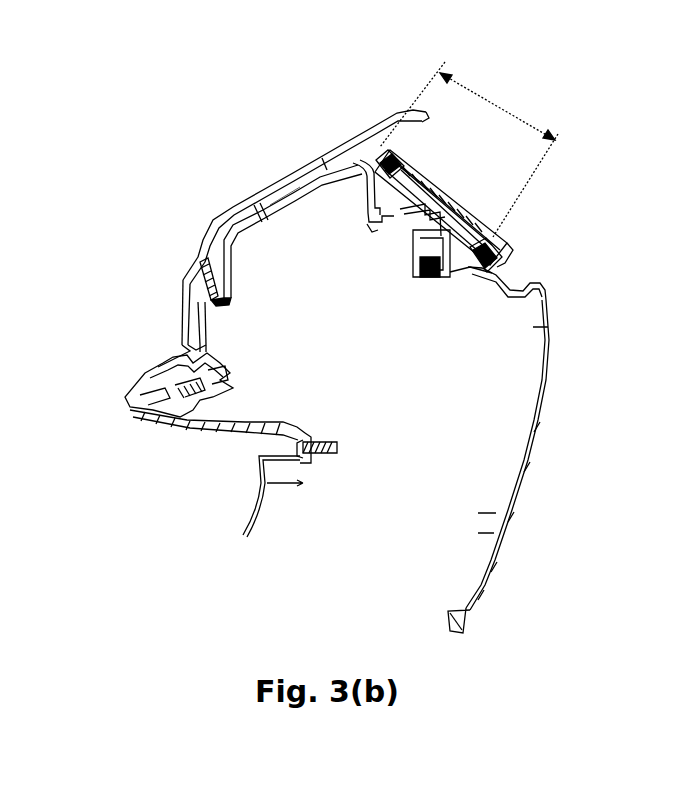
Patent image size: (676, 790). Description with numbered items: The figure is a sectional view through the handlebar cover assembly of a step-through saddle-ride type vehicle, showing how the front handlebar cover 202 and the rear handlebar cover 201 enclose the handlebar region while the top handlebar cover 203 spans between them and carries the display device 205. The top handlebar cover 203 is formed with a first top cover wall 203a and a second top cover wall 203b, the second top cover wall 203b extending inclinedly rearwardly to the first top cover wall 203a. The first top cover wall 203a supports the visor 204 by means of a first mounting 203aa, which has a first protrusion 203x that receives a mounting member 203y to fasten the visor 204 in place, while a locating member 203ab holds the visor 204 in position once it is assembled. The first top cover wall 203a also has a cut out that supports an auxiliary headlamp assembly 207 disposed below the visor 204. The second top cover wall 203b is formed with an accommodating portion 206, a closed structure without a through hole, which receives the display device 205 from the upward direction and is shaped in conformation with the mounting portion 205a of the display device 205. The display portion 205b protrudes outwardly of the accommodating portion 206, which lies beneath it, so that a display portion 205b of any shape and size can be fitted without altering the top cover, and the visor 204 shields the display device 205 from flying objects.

The rear handlebar cover 201 is at (549, 378).
The front handlebar cover 202 is at (187, 433).
The top handlebar cover 203 is at (237, 231).
The first top cover wall 203a is at (200, 317).
The first mounting 203aa is at (203, 287).
The locating member 203ab is at (232, 219).
The second top cover wall 203b is at (513, 287).
The first protrusion 203x is at (193, 263).
The mounting member 203y is at (222, 301).
The visor 204 is at (296, 165).
The display device 205 is at (430, 177).
The mounting portion 205a is at (373, 170).
The display portion 205b is at (469, 149).
The accommodating portion 206 is at (357, 191).
The auxiliary headlamp assembly 207 is at (157, 380).